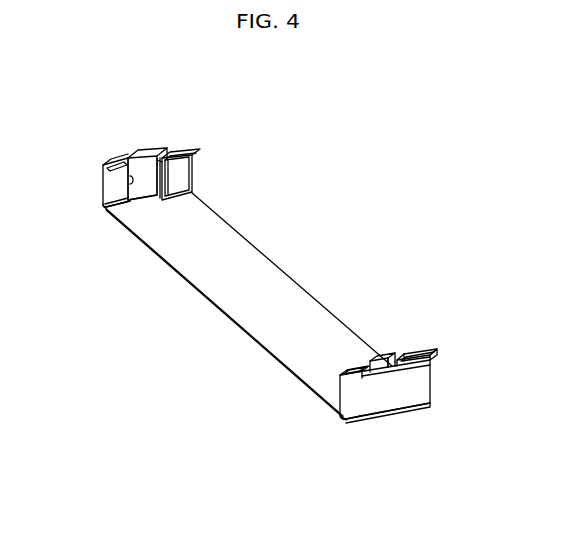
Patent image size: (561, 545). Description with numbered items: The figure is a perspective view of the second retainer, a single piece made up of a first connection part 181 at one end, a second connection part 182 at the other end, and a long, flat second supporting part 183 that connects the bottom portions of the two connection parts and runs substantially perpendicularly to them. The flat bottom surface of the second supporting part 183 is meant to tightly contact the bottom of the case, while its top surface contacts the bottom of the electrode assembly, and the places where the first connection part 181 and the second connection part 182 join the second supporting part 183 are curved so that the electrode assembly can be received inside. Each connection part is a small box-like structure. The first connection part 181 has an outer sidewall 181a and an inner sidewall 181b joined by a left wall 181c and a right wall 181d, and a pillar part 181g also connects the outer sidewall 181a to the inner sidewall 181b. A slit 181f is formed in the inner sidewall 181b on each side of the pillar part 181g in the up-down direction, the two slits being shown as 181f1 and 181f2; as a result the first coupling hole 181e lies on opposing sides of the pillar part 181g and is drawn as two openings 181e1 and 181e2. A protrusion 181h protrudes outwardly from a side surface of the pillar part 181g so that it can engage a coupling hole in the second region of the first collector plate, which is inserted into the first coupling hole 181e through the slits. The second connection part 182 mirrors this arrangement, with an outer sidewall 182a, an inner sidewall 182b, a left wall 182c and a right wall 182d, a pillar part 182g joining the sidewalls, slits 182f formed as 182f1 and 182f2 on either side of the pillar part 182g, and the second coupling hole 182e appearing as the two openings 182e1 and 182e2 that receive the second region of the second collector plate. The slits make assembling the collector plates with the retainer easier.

The first connection part 181 is at (147, 197).
The outer sidewall 181a is at (165, 149).
The inner sidewall 181b is at (186, 167).
The left wall 181c is at (107, 192).
The right wall 181d is at (181, 155).
The first coupling hole 181e is at (136, 137).
The first coupling hole portion 181e1 is at (125, 158).
The first coupling hole portion 181e2 is at (167, 156).
The slit 181f is at (102, 257).
The slit 181f1 is at (110, 207).
The slit 181f2 is at (132, 239).
The pillar part 181g is at (152, 178).
The protrusion 181h is at (130, 181).
The second connection part 182 is at (378, 374).
The outer sidewall 182a is at (420, 383).
The inner sidewall 182b is at (408, 352).
The left wall 182c is at (343, 390).
The right wall 182d is at (427, 357).
The second coupling hole 182e is at (399, 310).
The second coupling hole portion 182e1 is at (365, 368).
The second coupling hole portion 182e2 is at (396, 358).
The slit 182f is at (367, 436).
The slit 182f1 is at (358, 420).
The slit 182f2 is at (395, 418).
The pillar part 182g is at (395, 375).
The second supporting part 183 is at (267, 267).